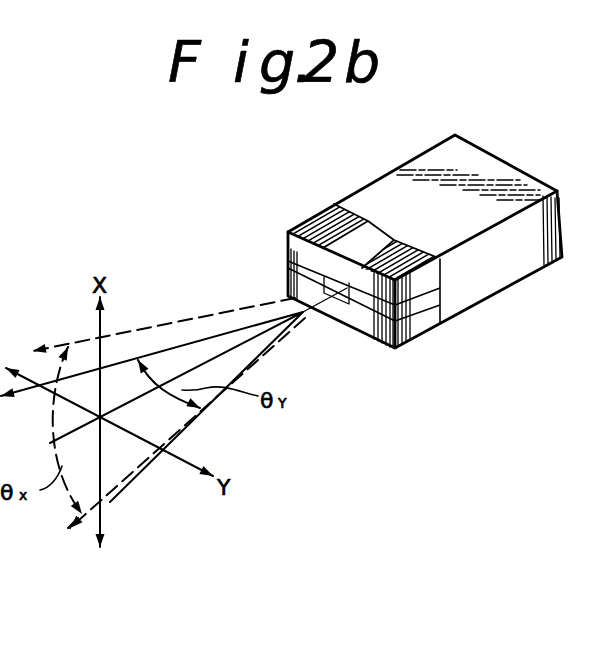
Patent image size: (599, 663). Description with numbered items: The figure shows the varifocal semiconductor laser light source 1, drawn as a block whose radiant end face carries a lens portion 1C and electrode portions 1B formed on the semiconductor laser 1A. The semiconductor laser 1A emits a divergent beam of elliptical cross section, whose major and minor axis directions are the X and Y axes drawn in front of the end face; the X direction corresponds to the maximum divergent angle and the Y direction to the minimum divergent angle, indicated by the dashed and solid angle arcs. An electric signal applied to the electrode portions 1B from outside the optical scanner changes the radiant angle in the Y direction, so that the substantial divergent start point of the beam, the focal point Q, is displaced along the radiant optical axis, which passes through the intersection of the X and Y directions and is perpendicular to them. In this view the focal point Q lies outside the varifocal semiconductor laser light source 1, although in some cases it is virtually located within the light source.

The varifocal semiconductor laser light source 1 is at (415, 245).
The semiconductor laser 1A is at (465, 173).
The electrode portions 1B is at (318, 216).
The lens portion 1C is at (430, 320).
The focal point Q is at (300, 318).